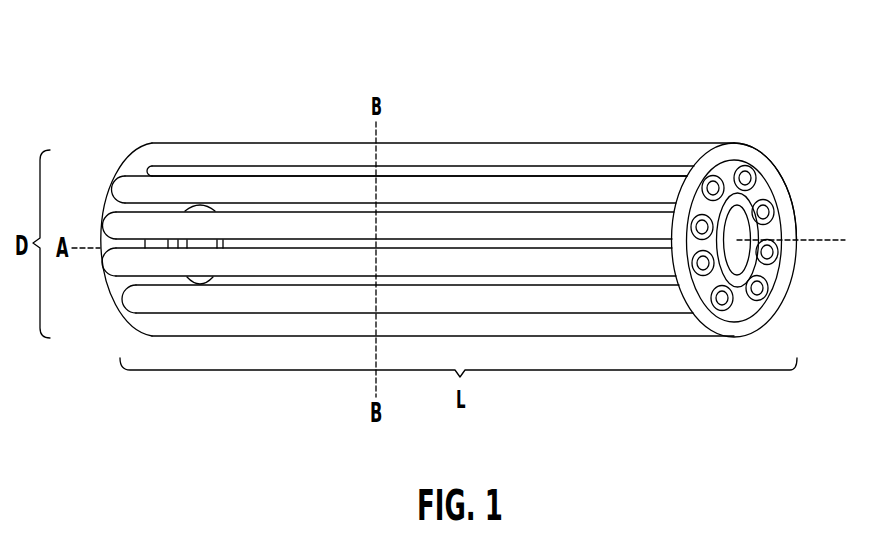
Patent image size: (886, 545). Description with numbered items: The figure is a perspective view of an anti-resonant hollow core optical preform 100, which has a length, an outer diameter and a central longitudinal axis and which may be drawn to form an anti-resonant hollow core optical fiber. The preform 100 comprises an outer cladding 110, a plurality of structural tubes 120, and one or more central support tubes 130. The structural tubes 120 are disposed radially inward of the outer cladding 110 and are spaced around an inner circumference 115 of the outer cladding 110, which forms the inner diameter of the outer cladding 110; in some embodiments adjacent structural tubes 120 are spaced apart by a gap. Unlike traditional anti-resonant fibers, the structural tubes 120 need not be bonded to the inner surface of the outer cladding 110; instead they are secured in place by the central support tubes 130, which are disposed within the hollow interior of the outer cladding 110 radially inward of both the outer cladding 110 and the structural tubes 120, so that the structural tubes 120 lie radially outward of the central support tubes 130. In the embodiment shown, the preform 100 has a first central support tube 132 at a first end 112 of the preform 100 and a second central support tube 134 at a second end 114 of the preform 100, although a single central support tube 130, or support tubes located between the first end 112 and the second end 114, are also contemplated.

The anti-resonant hollow core optical preform 100 is at (220, 30).
The outer cladding 110 is at (738, 152).
The first end 112 is at (728, 143).
The second end 114 is at (150, 143).
The inner circumference 115 is at (773, 187).
The structural tubes 120 is at (592, 263).
The central support tubes 130 is at (146, 245).
The first central support tube 132 is at (736, 282).
The second central support tube 134 is at (163, 247).